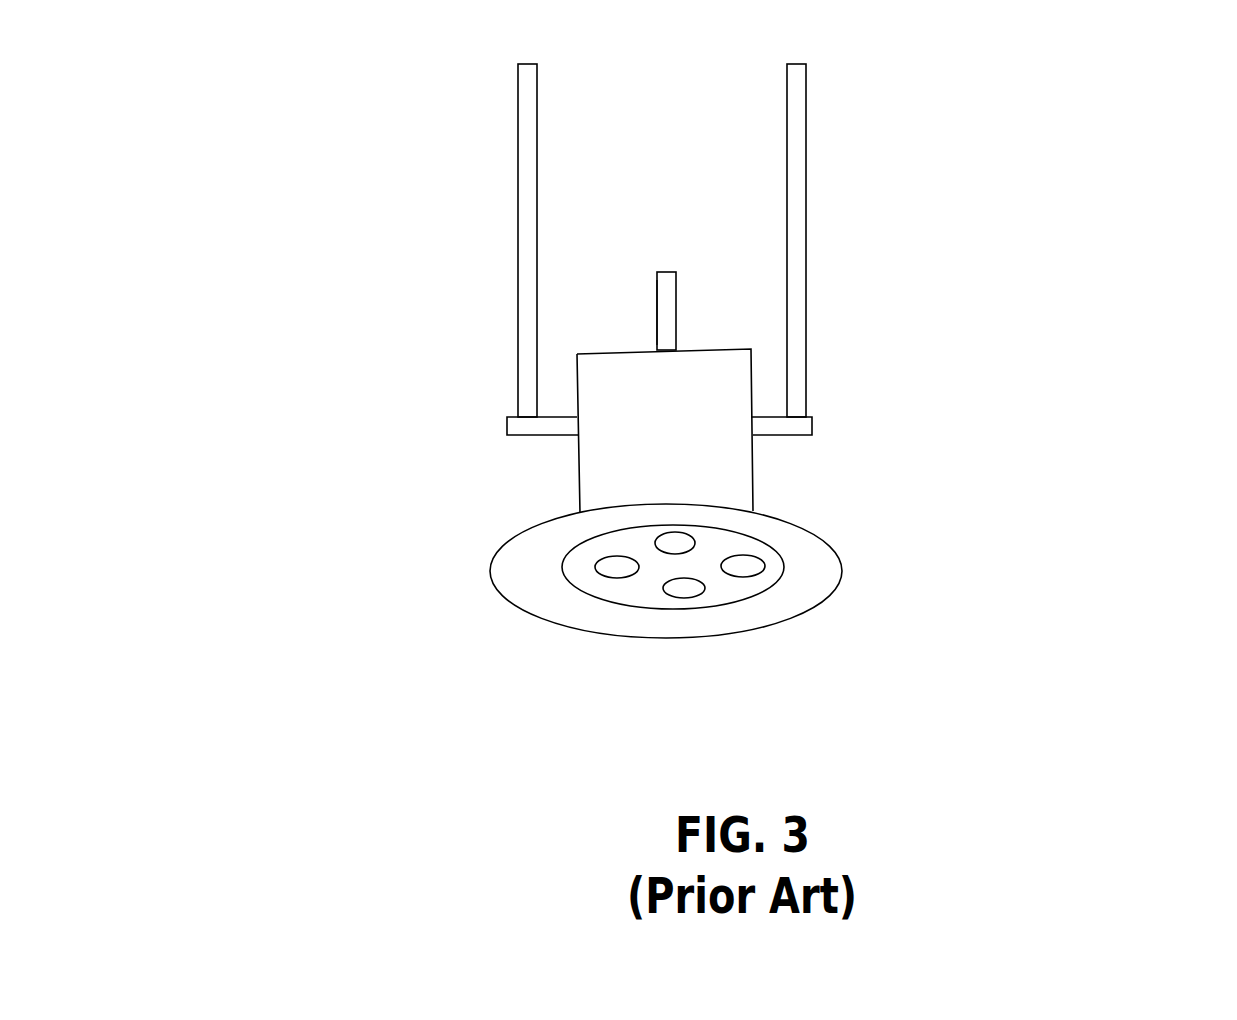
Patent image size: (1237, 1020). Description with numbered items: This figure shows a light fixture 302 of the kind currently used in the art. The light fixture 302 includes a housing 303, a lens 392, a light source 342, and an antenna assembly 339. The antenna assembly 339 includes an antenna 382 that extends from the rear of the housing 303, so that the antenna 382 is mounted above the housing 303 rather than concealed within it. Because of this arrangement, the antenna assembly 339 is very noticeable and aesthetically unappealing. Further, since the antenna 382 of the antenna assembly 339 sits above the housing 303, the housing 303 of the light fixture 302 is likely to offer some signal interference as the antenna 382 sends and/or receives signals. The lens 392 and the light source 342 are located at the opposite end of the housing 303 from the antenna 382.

The light fixture 302 is at (360, 68).
The housing 303 is at (717, 370).
The antenna assembly 339 is at (695, 297).
The antenna 382 is at (657, 312).
The lens 392 is at (602, 611).
The light source 342 is at (757, 572).